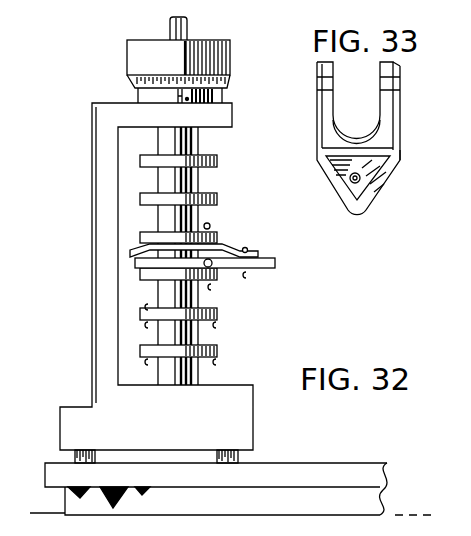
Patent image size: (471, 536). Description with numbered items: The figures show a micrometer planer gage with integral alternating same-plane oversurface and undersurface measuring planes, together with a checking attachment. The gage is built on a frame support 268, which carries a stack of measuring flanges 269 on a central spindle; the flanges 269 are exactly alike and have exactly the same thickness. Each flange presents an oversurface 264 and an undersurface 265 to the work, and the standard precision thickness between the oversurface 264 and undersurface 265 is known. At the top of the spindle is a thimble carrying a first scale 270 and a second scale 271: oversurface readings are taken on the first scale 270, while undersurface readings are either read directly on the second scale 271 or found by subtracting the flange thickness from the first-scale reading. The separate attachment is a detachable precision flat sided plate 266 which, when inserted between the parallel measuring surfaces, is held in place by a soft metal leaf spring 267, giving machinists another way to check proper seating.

In FIG. 32, the oversurface 264 is at (212, 231).
In FIG. 32, the undersurface 265 is at (212, 323).
In FIG. 33, the detachable precision flat sided plate 266 is at (386, 176).
In FIG. 33, the soft metal leaf spring 267 is at (398, 126).
In FIG. 32, the frame support 268 is at (107, 243).
In FIG. 32, the measuring flanges 269 is at (212, 192).
In FIG. 32, the first scale 270 is at (228, 50).
In FIG. 32, the second scale 271 is at (229, 84).